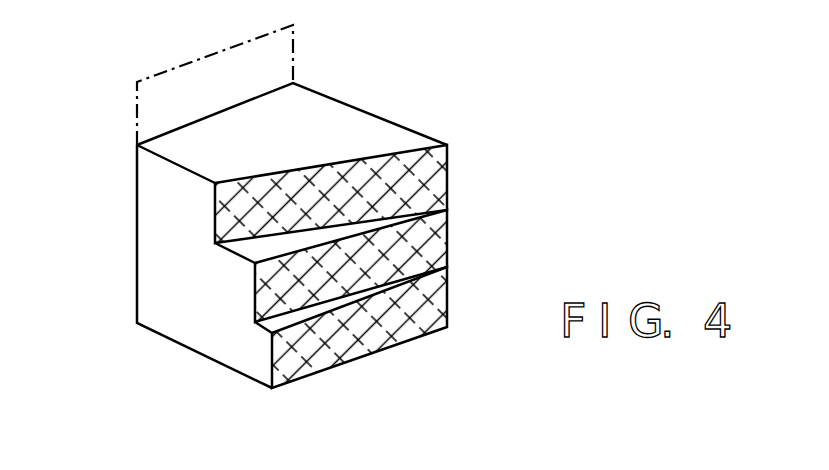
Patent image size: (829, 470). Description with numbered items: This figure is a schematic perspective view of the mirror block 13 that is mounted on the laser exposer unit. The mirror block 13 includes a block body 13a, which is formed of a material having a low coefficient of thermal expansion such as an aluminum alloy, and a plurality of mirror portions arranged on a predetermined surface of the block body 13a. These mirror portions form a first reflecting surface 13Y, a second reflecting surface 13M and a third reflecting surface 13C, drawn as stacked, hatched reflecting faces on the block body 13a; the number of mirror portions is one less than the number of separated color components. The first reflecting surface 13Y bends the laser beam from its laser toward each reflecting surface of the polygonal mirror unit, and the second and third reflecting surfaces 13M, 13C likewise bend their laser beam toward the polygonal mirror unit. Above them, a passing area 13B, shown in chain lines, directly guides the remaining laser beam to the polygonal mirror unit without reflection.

The mirror block 13 is at (364, 284).
The passing area 13B is at (136, 108).
The block body 13a is at (204, 350).
The third reflecting surface 13C is at (442, 184).
The second reflecting surface 13M is at (443, 238).
The first reflecting surface 13Y is at (428, 331).